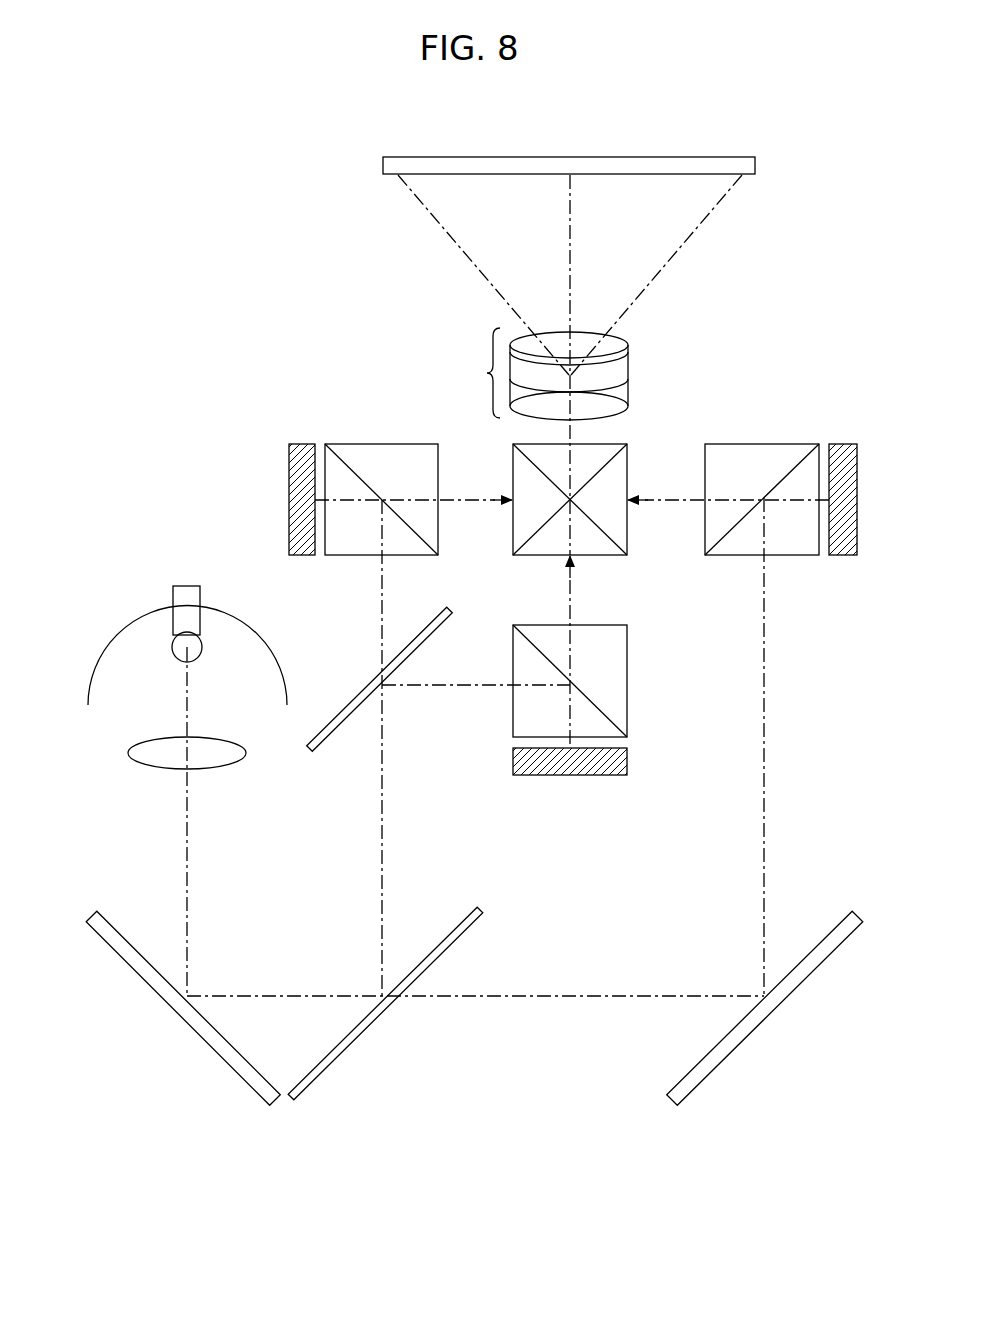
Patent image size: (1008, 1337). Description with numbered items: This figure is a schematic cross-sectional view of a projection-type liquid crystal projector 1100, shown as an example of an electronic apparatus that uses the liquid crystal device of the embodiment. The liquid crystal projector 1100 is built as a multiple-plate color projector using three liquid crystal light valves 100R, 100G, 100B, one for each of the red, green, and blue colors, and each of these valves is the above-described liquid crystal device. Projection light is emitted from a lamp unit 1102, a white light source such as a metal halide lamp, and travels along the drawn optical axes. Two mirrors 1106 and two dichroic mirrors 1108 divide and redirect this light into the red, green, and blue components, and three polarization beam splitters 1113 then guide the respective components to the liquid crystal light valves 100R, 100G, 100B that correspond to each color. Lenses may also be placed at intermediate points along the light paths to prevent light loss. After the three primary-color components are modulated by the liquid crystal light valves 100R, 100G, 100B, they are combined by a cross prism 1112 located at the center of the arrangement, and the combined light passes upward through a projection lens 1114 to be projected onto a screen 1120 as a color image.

The liquid crystal projector 1100 is at (322, 137).
The screen 1120 is at (694, 165).
The projection lens 1114 is at (487, 375).
The cross prism 1112 is at (598, 437).
The polarization beam splitter 1113 is at (376, 462).
The liquid crystal light valve 100B is at (305, 556).
The liquid crystal light valve 100R is at (849, 556).
The liquid crystal light valve 100G is at (584, 776).
The lamp unit 1102 is at (110, 652).
The dichroic mirror 1108 is at (338, 727).
The mirror 1106 is at (190, 1016).